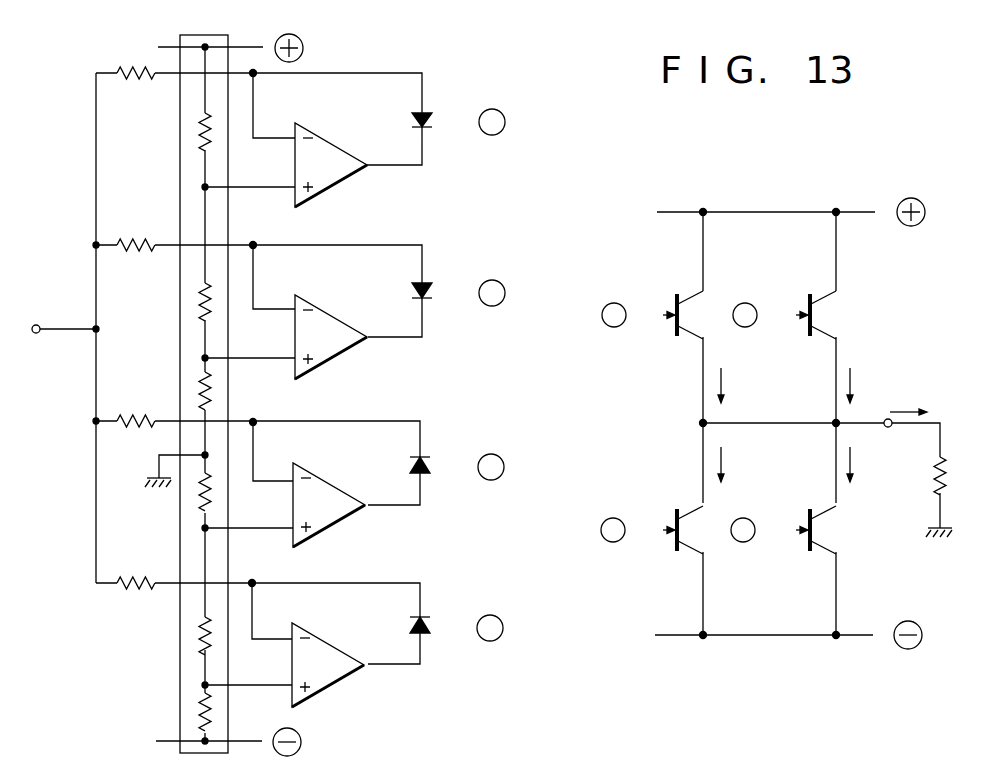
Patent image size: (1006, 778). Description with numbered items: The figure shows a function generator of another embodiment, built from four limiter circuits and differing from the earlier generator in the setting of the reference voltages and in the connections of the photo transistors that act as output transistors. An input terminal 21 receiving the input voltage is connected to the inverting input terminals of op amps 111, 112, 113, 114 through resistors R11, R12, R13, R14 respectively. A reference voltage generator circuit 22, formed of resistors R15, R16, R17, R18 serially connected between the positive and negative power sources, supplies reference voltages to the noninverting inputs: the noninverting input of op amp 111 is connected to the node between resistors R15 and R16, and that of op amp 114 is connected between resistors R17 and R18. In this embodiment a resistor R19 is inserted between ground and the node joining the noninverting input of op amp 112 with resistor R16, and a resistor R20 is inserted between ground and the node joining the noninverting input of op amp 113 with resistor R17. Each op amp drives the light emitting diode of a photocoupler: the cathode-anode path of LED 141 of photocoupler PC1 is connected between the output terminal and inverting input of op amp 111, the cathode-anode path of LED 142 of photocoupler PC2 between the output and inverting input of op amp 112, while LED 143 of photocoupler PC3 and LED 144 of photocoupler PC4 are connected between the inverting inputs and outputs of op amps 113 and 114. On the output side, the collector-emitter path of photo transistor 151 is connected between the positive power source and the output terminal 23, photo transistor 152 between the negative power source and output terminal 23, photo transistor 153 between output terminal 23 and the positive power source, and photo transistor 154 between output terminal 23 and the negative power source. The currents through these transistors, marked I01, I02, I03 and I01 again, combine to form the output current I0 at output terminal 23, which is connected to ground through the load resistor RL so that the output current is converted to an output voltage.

The reference voltage generator circuit 22 is at (180, 39).
The input terminal 21 is at (37, 326).
The output terminal 23 is at (891, 427).
The op amp 111 is at (326, 654).
The op amp 112 is at (326, 500).
The op amp 113 is at (326, 328).
The op amp 114 is at (326, 154).
The LED 141 is at (410, 626).
The LED 142 is at (410, 464).
The LED 143 is at (410, 290).
The LED 144 is at (410, 116).
The photo transistor 151 is at (672, 296).
The photo transistor 152 is at (672, 520).
The photo transistor 153 is at (805, 296).
The photo transistor 154 is at (805, 520).
The resistor R11 is at (130, 586).
The resistor R12 is at (122, 418).
The resistor R13 is at (120, 242).
The resistor R14 is at (135, 76).
The resistor R15 is at (201, 699).
The resistor R16 is at (200, 639).
The resistor R17 is at (201, 308).
The resistor R18 is at (201, 139).
The resistor R19 is at (200, 502).
The resistor R20 is at (199, 384).
The load resistor RL is at (945, 485).
The photocoupler PC1 is at (432, 626).
The photocoupler PC2 is at (432, 465).
The photocoupler PC3 is at (434, 291).
The photocoupler PC4 is at (434, 120).
The current I01 is at (739, 383).
The current I02 is at (739, 464).
The current I03 is at (867, 383).
The output current I0 is at (908, 401).